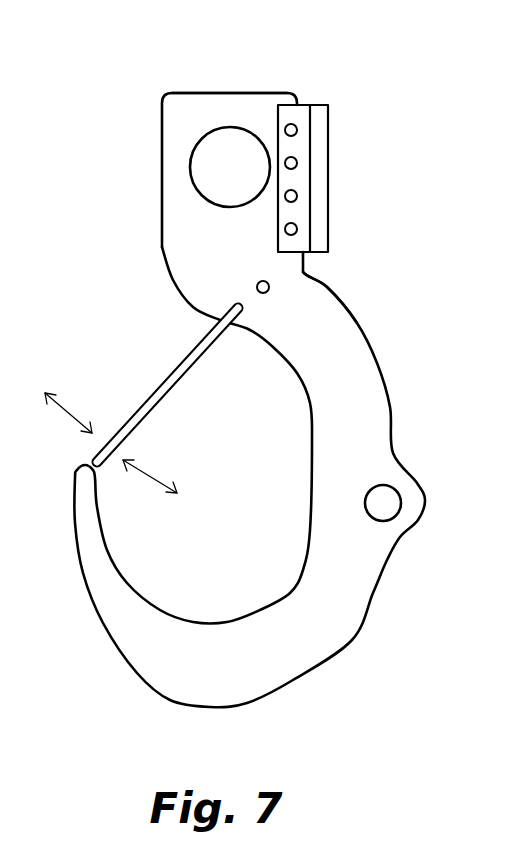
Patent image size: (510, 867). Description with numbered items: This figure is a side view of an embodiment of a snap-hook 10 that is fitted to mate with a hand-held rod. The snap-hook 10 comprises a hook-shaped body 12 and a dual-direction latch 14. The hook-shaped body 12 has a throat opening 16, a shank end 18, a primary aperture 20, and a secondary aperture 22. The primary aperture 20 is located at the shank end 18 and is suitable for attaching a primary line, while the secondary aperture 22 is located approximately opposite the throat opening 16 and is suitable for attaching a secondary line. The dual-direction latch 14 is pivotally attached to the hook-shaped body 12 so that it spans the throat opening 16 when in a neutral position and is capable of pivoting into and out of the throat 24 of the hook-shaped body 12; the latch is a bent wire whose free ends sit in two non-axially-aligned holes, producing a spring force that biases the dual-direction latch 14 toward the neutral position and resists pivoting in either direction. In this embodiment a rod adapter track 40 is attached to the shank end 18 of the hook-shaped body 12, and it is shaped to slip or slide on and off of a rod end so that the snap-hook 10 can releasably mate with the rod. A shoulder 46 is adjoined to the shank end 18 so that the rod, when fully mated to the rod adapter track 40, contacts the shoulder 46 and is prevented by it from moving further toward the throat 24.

The snap-hook 10 is at (260, 356).
The hook-shaped body 12 is at (363, 630).
The dual-direction latch 14 is at (138, 430).
The throat opening 16 is at (135, 375).
The shank end 18 is at (283, 93).
The primary aperture 20 is at (190, 166).
The secondary aperture 22 is at (400, 490).
The throat 24 is at (208, 542).
The rod adapter track 40 is at (329, 175).
The shoulder 46 is at (328, 288).